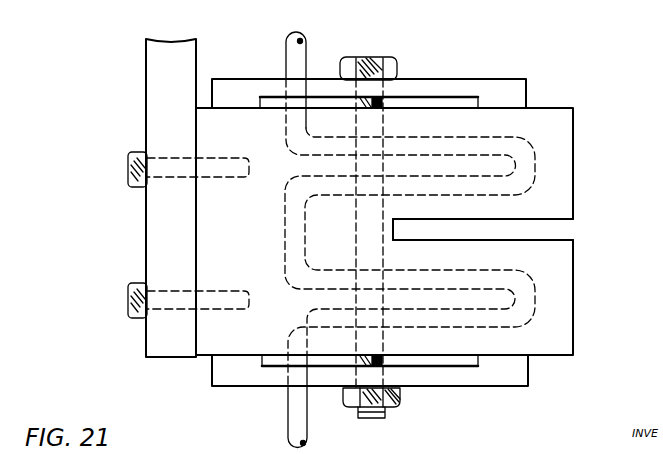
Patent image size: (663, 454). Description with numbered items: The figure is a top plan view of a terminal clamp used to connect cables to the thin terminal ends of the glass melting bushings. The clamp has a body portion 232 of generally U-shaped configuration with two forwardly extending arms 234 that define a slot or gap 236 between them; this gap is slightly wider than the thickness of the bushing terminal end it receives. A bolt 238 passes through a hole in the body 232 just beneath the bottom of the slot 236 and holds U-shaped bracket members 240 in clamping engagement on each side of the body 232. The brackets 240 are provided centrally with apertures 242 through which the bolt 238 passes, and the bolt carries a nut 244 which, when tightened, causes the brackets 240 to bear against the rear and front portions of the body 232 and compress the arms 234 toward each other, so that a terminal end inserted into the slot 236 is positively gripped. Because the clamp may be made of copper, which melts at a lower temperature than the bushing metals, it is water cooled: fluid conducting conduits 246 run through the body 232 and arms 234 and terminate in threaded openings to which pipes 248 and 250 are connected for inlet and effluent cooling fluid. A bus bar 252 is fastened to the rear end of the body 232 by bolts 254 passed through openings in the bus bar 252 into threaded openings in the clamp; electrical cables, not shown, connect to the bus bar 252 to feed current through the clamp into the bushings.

The body portion 232 is at (417, 220).
The forwardly extending arms 234 is at (562, 156).
The slot or gap 236 is at (566, 231).
The bolt 238 is at (379, 31).
The U-shaped bracket members 240 is at (455, 85).
The apertures 242 is at (353, 90).
The nut 244 is at (393, 406).
The fluid conducting conduits 246 is at (550, 309).
The pipe 248 is at (292, 55).
The pipe 250 is at (295, 428).
The bus bar 252 is at (157, 83).
The bolts 254 is at (128, 157).